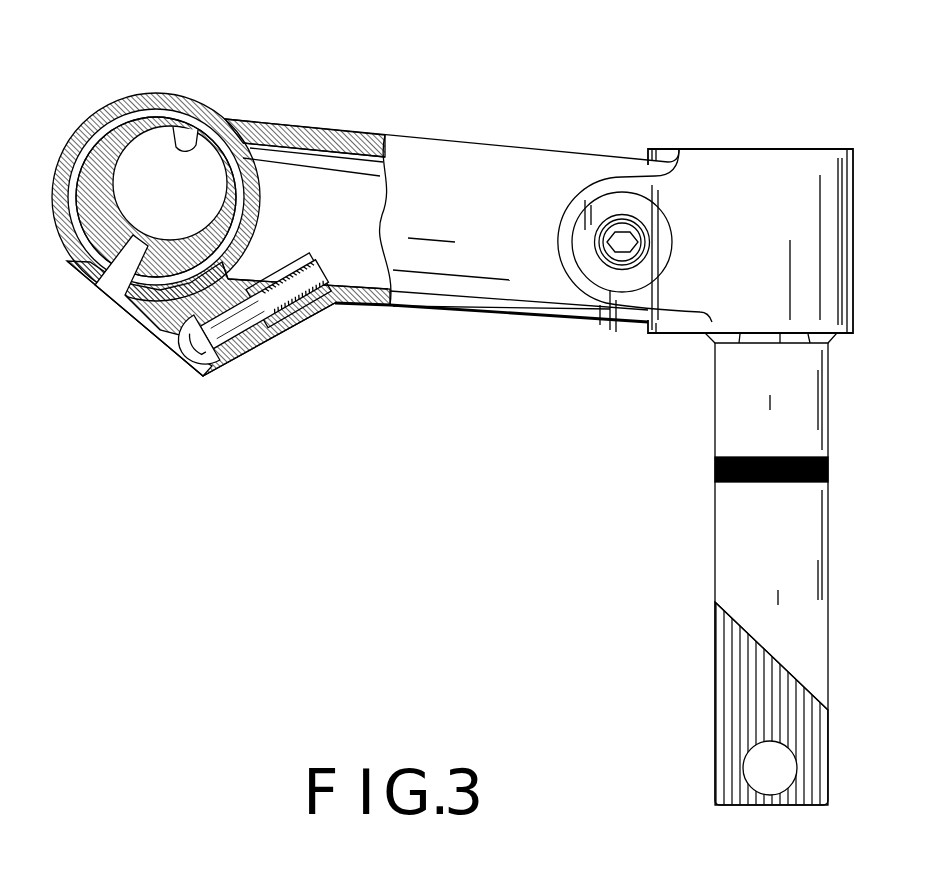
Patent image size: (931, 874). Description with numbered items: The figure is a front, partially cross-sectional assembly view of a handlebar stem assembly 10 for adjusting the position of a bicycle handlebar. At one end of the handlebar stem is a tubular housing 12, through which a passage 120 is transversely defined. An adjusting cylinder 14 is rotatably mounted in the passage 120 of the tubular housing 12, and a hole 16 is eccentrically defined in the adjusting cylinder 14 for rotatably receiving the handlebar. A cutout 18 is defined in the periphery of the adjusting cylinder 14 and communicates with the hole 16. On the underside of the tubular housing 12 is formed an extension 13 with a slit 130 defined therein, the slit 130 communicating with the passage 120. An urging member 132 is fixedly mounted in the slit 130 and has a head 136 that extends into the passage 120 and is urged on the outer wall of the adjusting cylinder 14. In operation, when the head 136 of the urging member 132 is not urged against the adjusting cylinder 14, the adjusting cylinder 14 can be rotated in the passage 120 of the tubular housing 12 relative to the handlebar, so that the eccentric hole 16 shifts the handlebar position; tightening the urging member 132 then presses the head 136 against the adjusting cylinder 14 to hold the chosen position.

The handlebar stem assembly 10 is at (457, 305).
The tubular housing 12 is at (135, 98).
The passage 120 is at (170, 117).
The extension 13 is at (160, 320).
The slit 130 is at (237, 360).
The urging member 132 is at (262, 353).
The head 136 is at (225, 280).
The adjusting cylinder 14 is at (110, 247).
The hole 16 is at (186, 140).
The cutout 18 is at (138, 290).